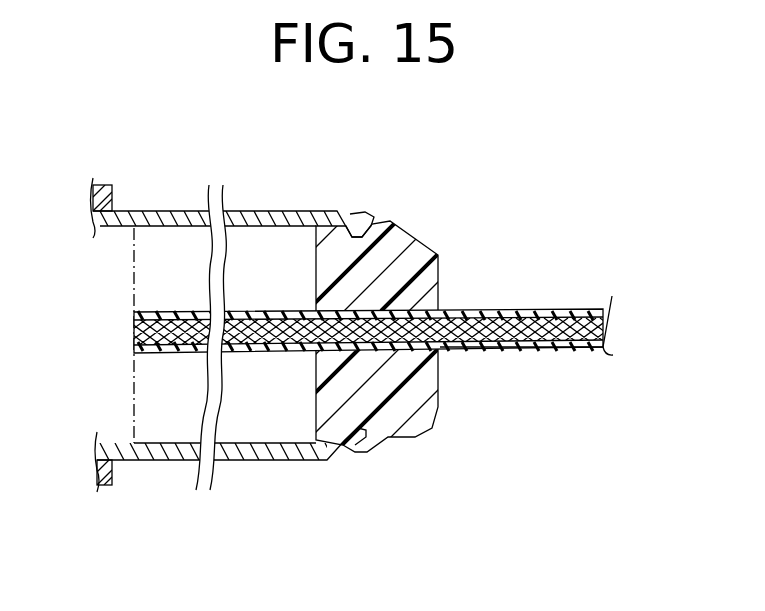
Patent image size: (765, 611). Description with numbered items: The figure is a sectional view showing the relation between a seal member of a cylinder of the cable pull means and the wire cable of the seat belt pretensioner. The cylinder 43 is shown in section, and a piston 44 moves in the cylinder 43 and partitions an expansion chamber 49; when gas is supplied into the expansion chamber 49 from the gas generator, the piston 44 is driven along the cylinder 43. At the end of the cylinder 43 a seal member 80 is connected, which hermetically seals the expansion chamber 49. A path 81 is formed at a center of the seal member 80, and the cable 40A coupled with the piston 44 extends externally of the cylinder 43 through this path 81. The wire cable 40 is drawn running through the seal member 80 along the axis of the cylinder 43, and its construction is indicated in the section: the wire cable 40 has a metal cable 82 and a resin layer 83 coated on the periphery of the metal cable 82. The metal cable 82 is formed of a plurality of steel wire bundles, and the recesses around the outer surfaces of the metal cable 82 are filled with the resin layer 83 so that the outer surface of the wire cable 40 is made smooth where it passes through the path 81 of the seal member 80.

The piston 44 is at (136, 246).
The cylinder 43 is at (254, 212).
The seal member 80 is at (402, 238).
The path 81 is at (412, 303).
The wire cable 40 is at (496, 311).
The resin layer 83 is at (548, 311).
The metal cable 82 is at (555, 348).
The cable 40A is at (473, 349).
The expansion chamber 49 is at (278, 407).